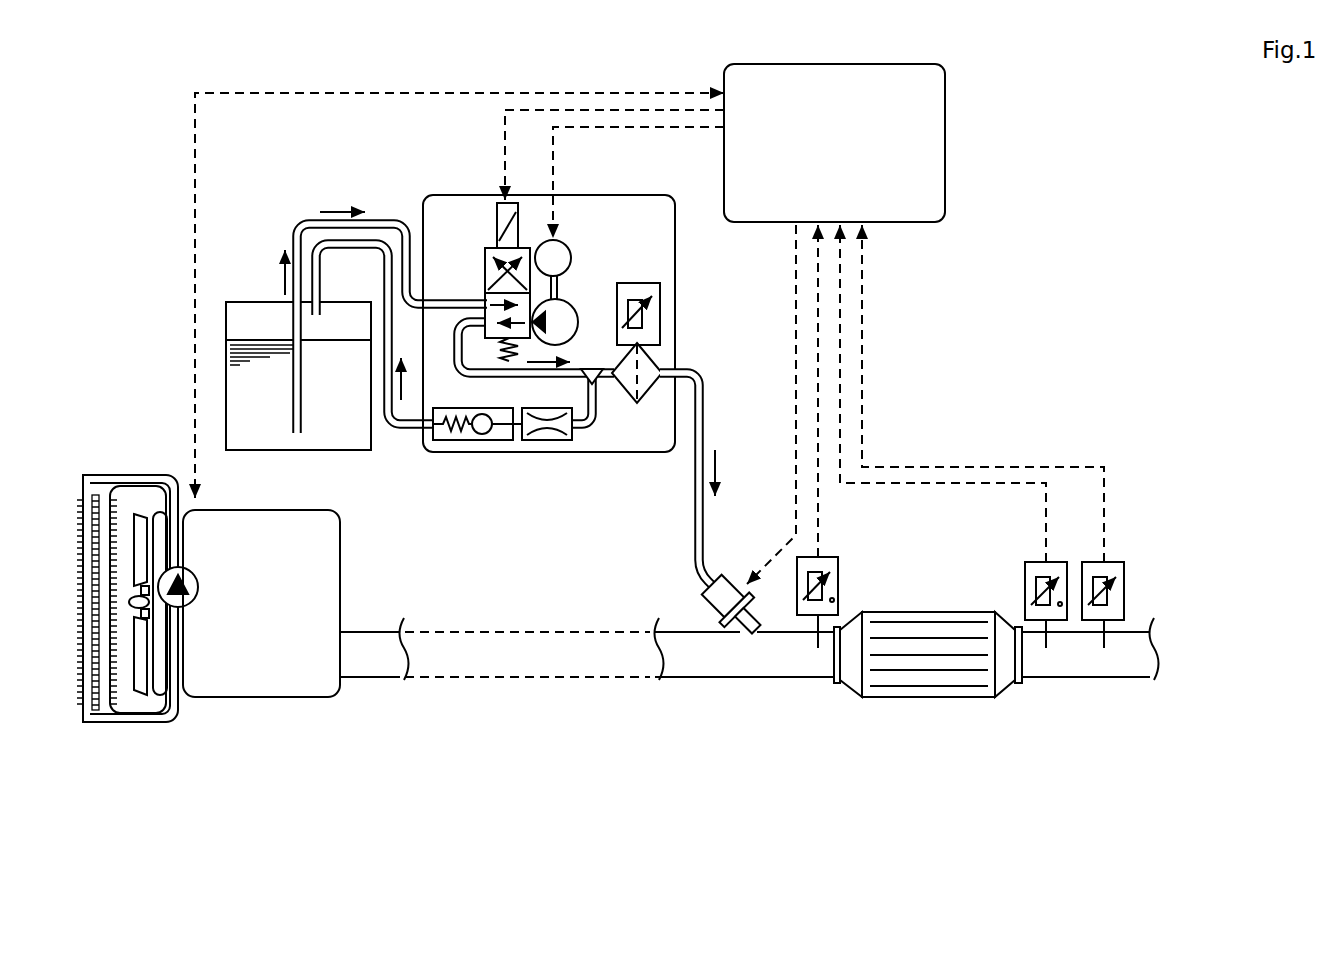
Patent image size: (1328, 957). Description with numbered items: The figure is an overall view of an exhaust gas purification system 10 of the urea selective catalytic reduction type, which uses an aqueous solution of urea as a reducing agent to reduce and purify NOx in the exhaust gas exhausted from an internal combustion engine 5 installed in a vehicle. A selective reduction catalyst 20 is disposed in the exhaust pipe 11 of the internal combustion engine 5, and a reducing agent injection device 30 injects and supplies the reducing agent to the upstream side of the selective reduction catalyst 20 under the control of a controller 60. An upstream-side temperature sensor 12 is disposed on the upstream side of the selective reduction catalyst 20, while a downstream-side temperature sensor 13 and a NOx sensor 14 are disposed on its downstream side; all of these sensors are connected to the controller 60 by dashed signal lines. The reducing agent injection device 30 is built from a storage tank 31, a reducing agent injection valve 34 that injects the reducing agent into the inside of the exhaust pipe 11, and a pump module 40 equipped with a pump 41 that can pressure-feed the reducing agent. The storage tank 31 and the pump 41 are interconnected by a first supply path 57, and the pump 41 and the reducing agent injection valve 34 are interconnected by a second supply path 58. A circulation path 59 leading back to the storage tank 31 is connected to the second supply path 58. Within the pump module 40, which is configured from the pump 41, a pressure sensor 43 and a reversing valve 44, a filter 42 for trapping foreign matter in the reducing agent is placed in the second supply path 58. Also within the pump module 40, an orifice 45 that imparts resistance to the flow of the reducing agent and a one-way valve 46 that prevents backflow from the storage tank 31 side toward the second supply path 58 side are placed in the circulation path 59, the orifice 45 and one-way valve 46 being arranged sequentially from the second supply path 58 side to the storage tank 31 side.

The internal combustion engine 5 is at (261, 603).
The exhaust gas purification system 10 is at (998, 245).
The exhaust pipe 11 is at (748, 680).
The upstream-side temperature sensor 12 is at (828, 558).
The downstream-side temperature sensor 13 is at (1056, 562).
The NOx sensor 14 is at (1115, 562).
The selective reduction catalyst 20 is at (942, 698).
The reducing agent injection device 30 is at (328, 182).
The storage tank 31 is at (330, 430).
The reducing agent injection valve 34 is at (745, 585).
The pump module 40 is at (600, 455).
The pump 41 is at (586, 282).
The filter 42 is at (640, 406).
The pressure sensor 43 is at (662, 300).
The reversing valve 44 is at (522, 222).
The orifice 45 is at (543, 445).
The one-way valve 46 is at (490, 445).
The first supply path 57 is at (383, 218).
The second supply path 58 is at (708, 402).
The circulation path 59 is at (398, 445).
The controller 60 is at (834, 143).